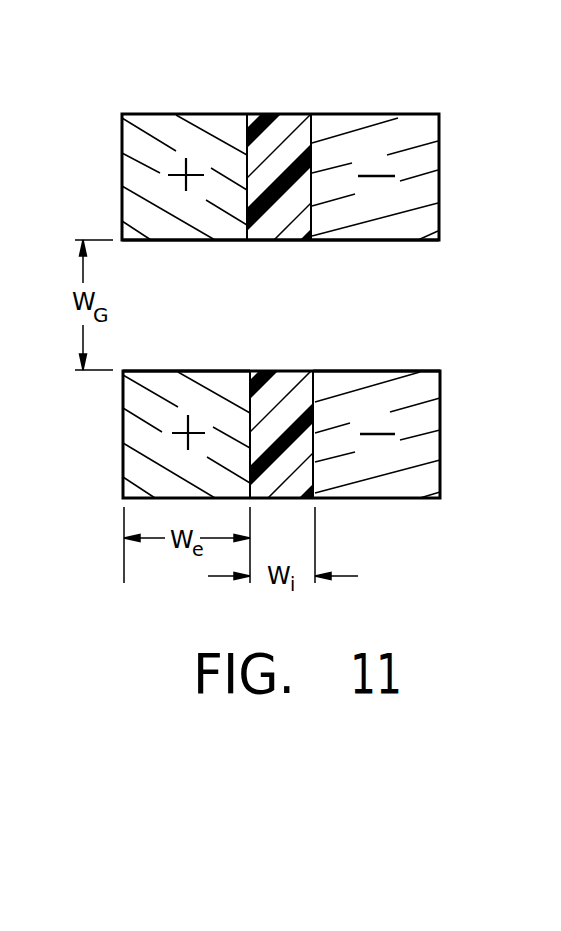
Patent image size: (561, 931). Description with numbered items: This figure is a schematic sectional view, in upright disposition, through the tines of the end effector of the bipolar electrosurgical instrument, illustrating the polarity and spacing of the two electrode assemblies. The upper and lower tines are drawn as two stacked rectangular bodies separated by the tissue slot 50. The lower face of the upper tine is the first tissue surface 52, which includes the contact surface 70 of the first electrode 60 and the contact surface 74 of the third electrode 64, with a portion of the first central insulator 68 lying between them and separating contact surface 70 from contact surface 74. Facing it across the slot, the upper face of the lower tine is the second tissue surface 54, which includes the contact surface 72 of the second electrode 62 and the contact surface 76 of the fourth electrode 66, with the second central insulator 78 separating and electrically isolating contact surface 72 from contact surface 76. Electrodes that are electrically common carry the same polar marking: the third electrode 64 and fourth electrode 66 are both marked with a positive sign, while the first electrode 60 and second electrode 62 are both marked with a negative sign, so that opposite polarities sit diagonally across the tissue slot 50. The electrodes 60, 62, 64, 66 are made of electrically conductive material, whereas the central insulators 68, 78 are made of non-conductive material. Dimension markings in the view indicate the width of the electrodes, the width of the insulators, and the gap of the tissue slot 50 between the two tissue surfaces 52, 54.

The tissue slot 50 is at (436, 301).
The first tissue surface 52 is at (292, 243).
The second tissue surface 54 is at (254, 378).
The first electrode 60 is at (405, 128).
The second electrode 62 is at (433, 397).
The third electrode 64 is at (157, 118).
The fourth electrode 66 is at (143, 412).
The first central insulator 68 is at (283, 122).
The contact surface of first electrode 70 is at (407, 243).
The contact surface of second electrode 72 is at (370, 372).
The contact surface of third electrode 74 is at (167, 243).
The contact surface of fourth electrode 76 is at (210, 368).
The second central insulator 78 is at (287, 385).